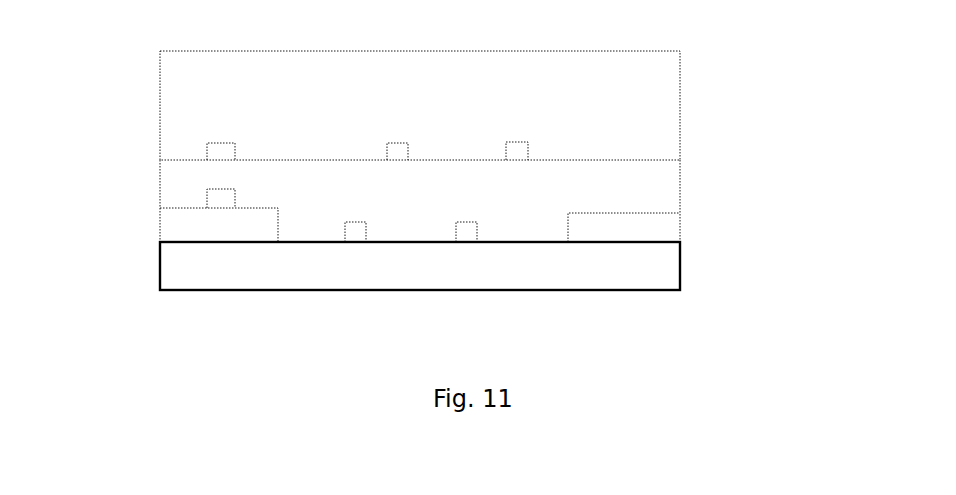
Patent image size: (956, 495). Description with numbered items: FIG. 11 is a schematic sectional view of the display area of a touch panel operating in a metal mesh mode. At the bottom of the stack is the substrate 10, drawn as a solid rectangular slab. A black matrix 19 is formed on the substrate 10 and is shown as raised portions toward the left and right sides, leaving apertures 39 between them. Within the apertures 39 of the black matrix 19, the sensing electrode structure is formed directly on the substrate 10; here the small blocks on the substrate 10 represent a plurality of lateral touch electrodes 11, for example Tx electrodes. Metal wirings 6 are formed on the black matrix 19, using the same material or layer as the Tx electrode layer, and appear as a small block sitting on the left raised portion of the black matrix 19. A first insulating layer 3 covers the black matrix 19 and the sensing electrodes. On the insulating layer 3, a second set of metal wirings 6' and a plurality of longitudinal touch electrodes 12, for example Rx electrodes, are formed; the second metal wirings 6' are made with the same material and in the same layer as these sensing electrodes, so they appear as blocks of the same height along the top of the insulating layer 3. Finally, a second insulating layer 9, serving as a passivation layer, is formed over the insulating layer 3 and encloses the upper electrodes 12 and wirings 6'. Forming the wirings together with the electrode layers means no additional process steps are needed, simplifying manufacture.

The second insulating layer 9 is at (662, 113).
The first insulating layer 3 is at (662, 193).
The black matrix 19 is at (663, 230).
The substrate 10 is at (668, 272).
The second metal wirings 6' is at (253, 144).
The longitudinal touch electrodes 12 is at (509, 142).
The metal wirings 6 is at (167, 195).
The lateral touch electrodes 11 is at (463, 240).
The apertures 39 is at (523, 228).